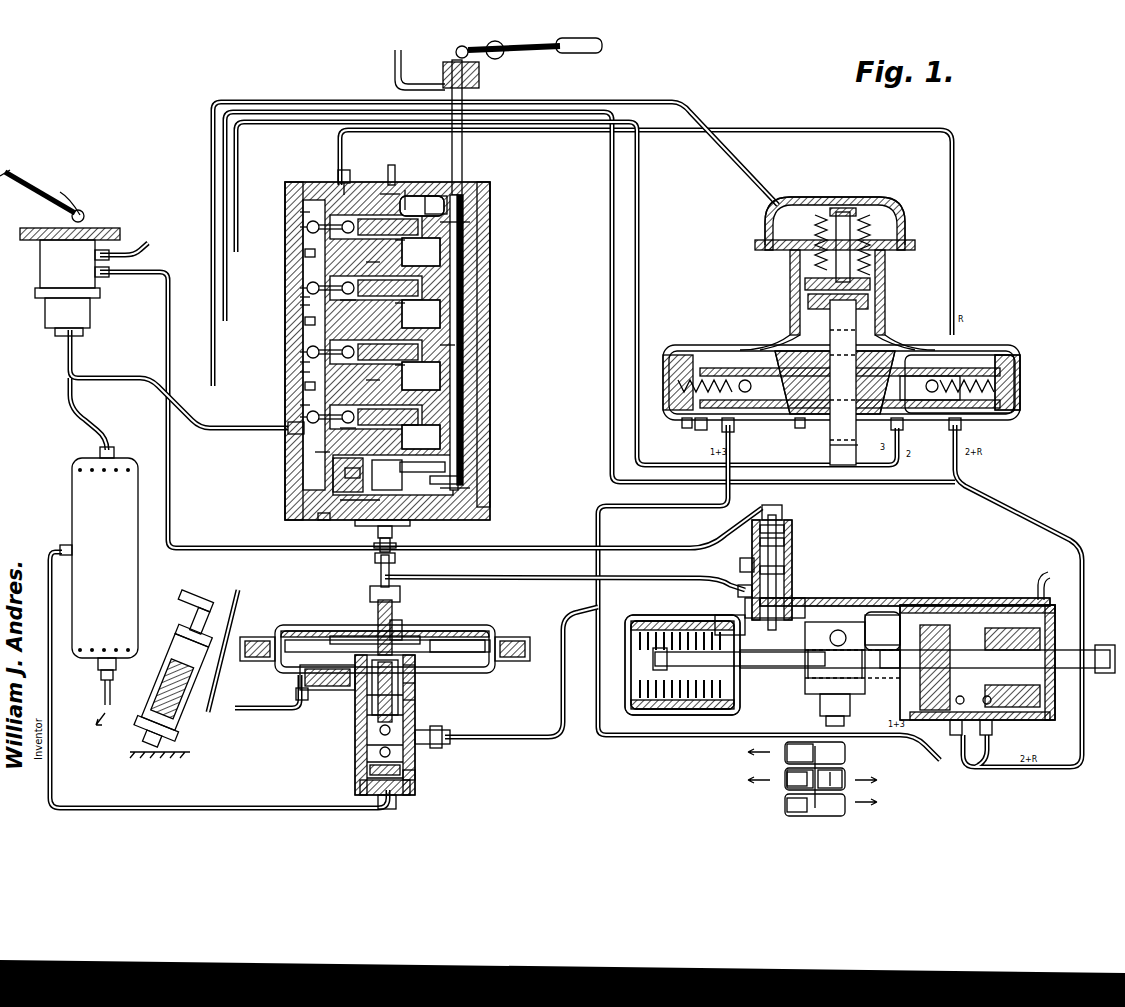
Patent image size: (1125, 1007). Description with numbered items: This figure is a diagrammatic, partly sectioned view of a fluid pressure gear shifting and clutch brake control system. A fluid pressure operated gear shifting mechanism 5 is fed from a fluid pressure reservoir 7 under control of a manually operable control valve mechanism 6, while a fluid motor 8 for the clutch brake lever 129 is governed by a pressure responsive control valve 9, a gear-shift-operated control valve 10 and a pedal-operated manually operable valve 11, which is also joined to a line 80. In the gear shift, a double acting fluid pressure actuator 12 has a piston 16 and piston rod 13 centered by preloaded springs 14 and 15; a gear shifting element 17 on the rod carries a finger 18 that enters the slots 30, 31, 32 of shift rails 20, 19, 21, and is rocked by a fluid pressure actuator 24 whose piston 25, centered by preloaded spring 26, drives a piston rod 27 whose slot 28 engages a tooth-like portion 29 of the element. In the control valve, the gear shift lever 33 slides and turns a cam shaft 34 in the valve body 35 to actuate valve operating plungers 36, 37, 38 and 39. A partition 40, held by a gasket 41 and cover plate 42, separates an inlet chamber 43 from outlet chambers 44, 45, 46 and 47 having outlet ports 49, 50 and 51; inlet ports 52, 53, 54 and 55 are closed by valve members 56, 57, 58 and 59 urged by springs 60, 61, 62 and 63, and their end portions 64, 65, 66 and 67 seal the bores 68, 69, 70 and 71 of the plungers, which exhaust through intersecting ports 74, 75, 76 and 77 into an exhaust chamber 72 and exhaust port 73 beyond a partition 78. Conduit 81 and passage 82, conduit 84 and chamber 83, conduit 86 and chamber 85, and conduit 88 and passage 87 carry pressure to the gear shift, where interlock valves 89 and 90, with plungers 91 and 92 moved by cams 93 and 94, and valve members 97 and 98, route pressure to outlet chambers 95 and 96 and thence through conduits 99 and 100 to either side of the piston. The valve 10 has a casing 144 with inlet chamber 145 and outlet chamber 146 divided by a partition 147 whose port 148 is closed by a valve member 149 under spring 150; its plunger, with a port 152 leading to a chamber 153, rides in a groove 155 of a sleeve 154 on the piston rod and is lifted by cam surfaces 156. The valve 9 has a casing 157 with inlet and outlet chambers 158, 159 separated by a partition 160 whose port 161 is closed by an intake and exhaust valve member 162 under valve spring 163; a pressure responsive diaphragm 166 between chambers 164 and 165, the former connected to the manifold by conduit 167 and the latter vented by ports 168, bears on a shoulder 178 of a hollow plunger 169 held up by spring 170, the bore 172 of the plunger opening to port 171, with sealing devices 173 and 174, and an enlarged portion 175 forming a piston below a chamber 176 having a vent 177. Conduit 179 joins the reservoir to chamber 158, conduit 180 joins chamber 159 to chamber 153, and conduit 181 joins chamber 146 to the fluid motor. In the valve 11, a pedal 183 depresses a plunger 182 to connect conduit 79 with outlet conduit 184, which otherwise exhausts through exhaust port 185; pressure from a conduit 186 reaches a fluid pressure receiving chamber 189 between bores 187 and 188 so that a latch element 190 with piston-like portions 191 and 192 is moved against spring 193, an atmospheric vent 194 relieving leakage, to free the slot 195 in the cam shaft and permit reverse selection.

The fluid pressure operated gear shifting mechanism 5 is at (905, 337).
The manually operable control valve mechanism 6 is at (491, 312).
The fluid pressure reservoir 7 is at (139, 498).
The fluid motor 8 is at (161, 643).
The pressure responsive control valve 9 is at (471, 619).
The control valve 10 is at (800, 556).
The manually operable valve 11 is at (33, 276).
The double acting fluid pressure actuator 12 is at (940, 600).
The piston rod 13 is at (880, 660).
The preloaded spring 14 is at (640, 712).
The preloaded spring 15 is at (660, 712).
The piston 16 is at (1000, 612).
The gear shifting element 17 is at (882, 612).
The finger 18 is at (844, 714).
The shift rail 19 is at (850, 752).
The shift rail 20 is at (850, 780).
The shift rail 21 is at (843, 780).
The fluid pressure actuator 24 is at (872, 285).
The piston 25 is at (870, 302).
The preloaded spring 26 is at (872, 235).
The piston rod 27 is at (858, 455).
The slot 28 is at (850, 620).
The tooth-like portion 29 is at (838, 630).
The slot 30 is at (800, 779).
The slot 31 is at (800, 753).
The slot 32 is at (799, 805).
The gear shift lever 33 is at (600, 45).
The cam shaft 34 is at (490, 252).
The valve body 35 is at (388, 182).
The valve operating plunger 36 is at (425, 195).
The valve operating plunger 37 is at (421, 256).
The valve operating plunger 38 is at (432, 351).
The valve operating plunger 39 is at (418, 380).
The partition 40 is at (338, 182).
The gasket 41 is at (372, 478).
The cover plate 42 is at (333, 467).
The inlet chamber 43 is at (294, 196).
The outlet chamber 44 is at (305, 252).
The outlet chamber 45 is at (377, 256).
The outlet chamber 46 is at (346, 182).
The outlet chamber 47 is at (374, 372).
The outlet port 49 is at (305, 320).
The outlet port 50 is at (305, 385).
The outlet port 51 is at (300, 405).
The inlet port 52 is at (300, 212).
The inlet port 53 is at (300, 288).
The inlet port 54 is at (300, 352).
The inlet port 55 is at (300, 417).
The valve member 56 is at (300, 227).
The valve member 57 is at (300, 297).
The valve member 58 is at (300, 362).
The valve member 59 is at (288, 428).
The spring 60 is at (385, 194).
The spring 61 is at (300, 305).
The spring 62 is at (300, 372).
The spring 63 is at (318, 452).
The valve end portion 64 is at (362, 232).
The valve end portion 65 is at (362, 279).
The valve end portion 66 is at (362, 345).
The valve end portion 67 is at (356, 425).
The bore 68 is at (408, 249).
The bore 69 is at (690, 412).
The bore 70 is at (344, 311).
The bore 71 is at (347, 411).
The exhaust chamber 72 is at (433, 198).
The exhaust port 73 is at (406, 190).
The intersecting port 74 is at (472, 222).
The intersecting port 75 is at (408, 313).
The intersecting port 76 is at (406, 372).
The intersecting port 77 is at (418, 437).
The partition 78 is at (421, 319).
The conduit 79 is at (93, 426).
The pipe 80 is at (108, 377).
The conduit 81 is at (820, 130).
The passage 82 is at (965, 354).
The chamber 83 is at (904, 420).
The conduit 84 is at (860, 484).
The chamber 85 is at (801, 422).
The conduit 86 is at (639, 300).
The passage 87 is at (780, 232).
The conduit 88 is at (735, 150).
The interlock valve 89 is at (686, 418).
The interlock valve 90 is at (1016, 410).
The valve operating plunger 91 is at (790, 350).
The valve operating plunger 92 is at (905, 372).
The cam 93 is at (822, 352).
The cam 94 is at (832, 446).
The outlet chamber 95 is at (736, 420).
The outlet chamber 96 is at (952, 432).
The valve member 97 is at (700, 430).
The valve member 98 is at (985, 414).
The conduit 99 is at (665, 508).
The conduit 100 is at (1020, 514).
The brake lever 129 is at (175, 602).
The casing 144 is at (785, 528).
The inlet chamber 145 is at (785, 542).
The outlet chamber 146 is at (785, 570).
The partition 147 is at (750, 566).
The port 148 is at (750, 590).
The valve member 149 is at (790, 600).
The spring 150 is at (782, 512).
The port 152 is at (835, 658).
The chamber 153 is at (720, 617).
The sleeve 154 is at (820, 695).
The groove 155 is at (836, 664).
The cam surfaces 156 is at (739, 662).
The casing 157 is at (414, 701).
The inlet chamber 158 is at (416, 775).
The outlet chamber 159 is at (362, 716).
The partition 160 is at (360, 763).
The port 161 is at (362, 779).
The intake and exhaust valve member 162 is at (397, 800).
The valve spring 163 is at (360, 746).
The chamber 164 is at (485, 654).
The chamber 165 is at (438, 634).
The pressure responsive diaphragm 166 is at (495, 636).
The conduit 167 is at (242, 706).
The ports 168 is at (402, 628).
The hollow plunger 169 is at (414, 684).
The spring 170 is at (442, 739).
The port 171 is at (375, 592).
The bore 172 is at (414, 666).
The sealing device 173 is at (360, 640).
The sealing device 174 is at (365, 632).
The enlarged portion 175 is at (365, 696).
The chamber 176 is at (365, 680).
The vent 177 is at (355, 662).
The shoulder 178 is at (395, 620).
The conduit 179 is at (150, 806).
The conduit 180 is at (515, 738).
The conduit 181 is at (520, 579).
The plunger 182 is at (62, 216).
The pedal 183 is at (50, 197).
The outlet conduit 184 is at (168, 270).
The exhaust port 185 is at (142, 245).
The conduit 186 is at (396, 546).
The bore 187 is at (322, 520).
The bore 188 is at (376, 558).
The fluid pressure receiving chamber 189 is at (378, 532).
The latch element 190 is at (455, 497).
The piston-like portion 191 is at (360, 526).
The piston-like portion 192 is at (440, 464).
The spring 193 is at (345, 485).
The atmospheric vent 194 is at (350, 503).
The slot 195 is at (455, 478).